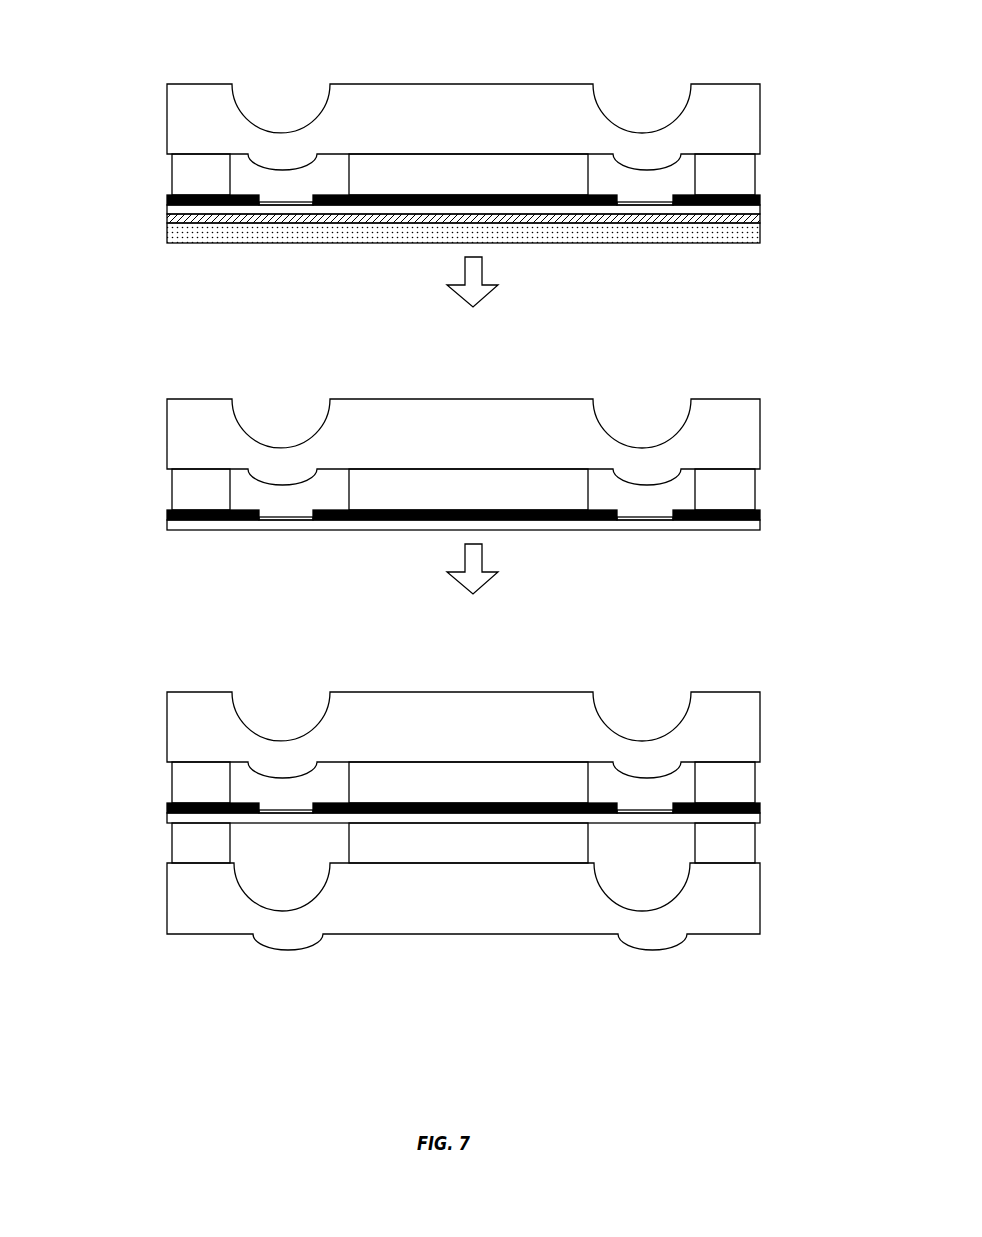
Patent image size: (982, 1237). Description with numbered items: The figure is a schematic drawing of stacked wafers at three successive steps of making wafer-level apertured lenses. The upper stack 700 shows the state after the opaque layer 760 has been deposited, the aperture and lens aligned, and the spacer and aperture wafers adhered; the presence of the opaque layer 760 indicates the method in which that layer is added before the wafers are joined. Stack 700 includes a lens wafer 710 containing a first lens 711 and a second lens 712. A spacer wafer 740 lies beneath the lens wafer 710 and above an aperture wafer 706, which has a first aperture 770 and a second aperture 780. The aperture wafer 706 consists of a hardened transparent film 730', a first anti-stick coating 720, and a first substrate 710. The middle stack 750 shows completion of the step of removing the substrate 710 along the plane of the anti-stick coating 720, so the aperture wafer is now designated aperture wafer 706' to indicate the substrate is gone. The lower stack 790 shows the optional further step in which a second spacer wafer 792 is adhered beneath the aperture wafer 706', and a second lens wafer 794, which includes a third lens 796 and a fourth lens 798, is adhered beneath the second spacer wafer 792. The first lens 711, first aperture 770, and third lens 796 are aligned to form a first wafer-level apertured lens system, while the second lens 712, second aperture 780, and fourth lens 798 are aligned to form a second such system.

The stack 700 is at (139, 66).
The stack 750 is at (139, 381).
The stack 790 is at (144, 670).
The aperture wafer 706 is at (812, 245).
The aperture wafer 706' is at (814, 694).
The lens wafer 710 is at (480, 84).
The first lens 711 is at (284, 101).
The second lens 712 is at (646, 101).
The first anti-stick coating 720 is at (165, 219).
The hardened transparent film 730' is at (430, 514).
The spacer wafer 740 is at (463, 478).
The opaque layer 760 is at (385, 195).
The first aperture 770 is at (285, 188).
The second aperture 780 is at (655, 187).
The second spacer wafer 792 is at (463, 843).
The second lens wafer 794 is at (459, 937).
The third lens 796 is at (276, 972).
The fourth lens 798 is at (651, 972).